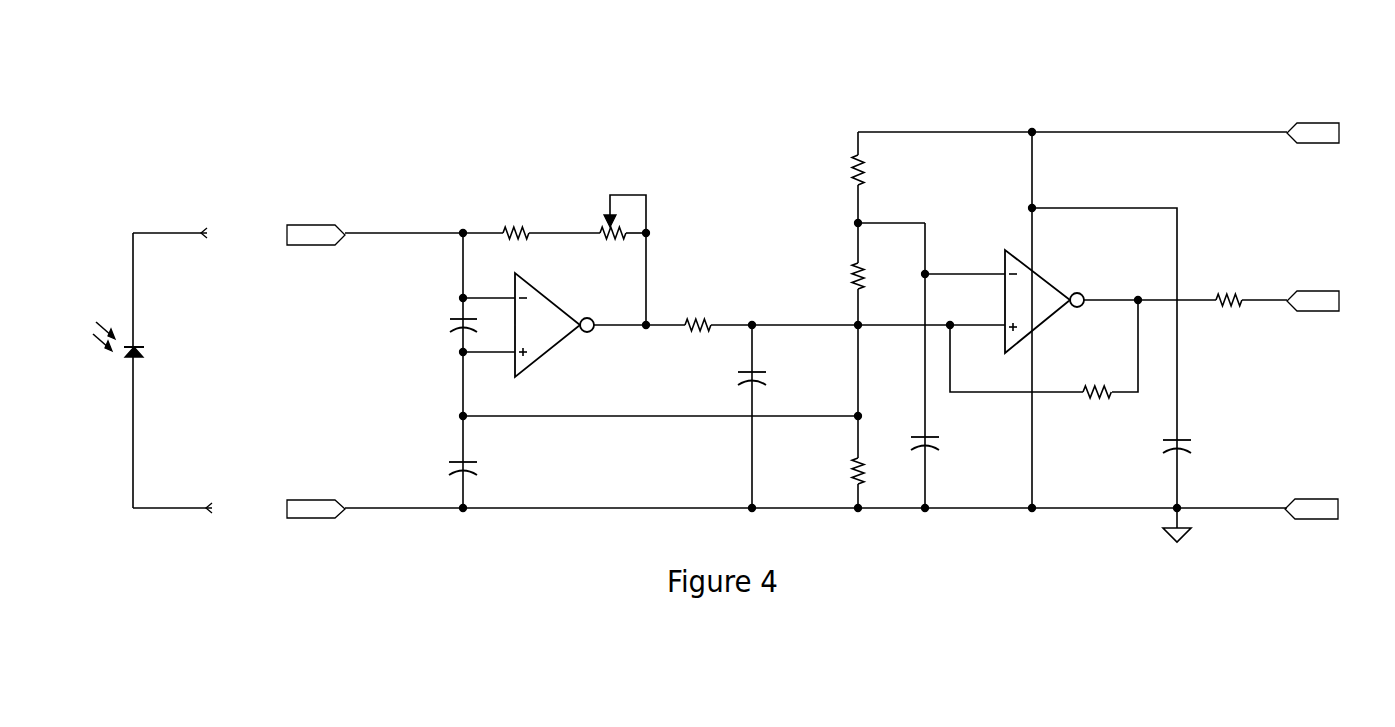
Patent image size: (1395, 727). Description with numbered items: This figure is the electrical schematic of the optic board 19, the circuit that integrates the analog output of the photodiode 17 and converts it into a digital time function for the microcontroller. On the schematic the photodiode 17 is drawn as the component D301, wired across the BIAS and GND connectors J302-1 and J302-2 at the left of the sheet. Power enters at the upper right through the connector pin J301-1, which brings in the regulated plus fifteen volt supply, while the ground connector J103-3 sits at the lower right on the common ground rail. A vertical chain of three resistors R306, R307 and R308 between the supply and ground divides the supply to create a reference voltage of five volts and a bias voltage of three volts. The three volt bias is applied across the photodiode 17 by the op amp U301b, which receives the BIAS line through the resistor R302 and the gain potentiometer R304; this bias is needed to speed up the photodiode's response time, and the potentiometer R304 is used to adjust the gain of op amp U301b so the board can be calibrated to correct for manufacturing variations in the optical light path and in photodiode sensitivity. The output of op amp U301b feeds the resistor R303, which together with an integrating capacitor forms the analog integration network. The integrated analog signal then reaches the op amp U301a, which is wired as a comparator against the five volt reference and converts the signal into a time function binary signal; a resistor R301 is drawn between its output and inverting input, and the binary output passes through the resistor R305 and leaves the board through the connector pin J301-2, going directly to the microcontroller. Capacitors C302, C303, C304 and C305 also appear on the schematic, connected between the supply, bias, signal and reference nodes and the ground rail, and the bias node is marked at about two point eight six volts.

The photodiode 17 is at (127, 358).
The optic board 19 is at (340, 102).
The photodiode OSD1-E D301 is at (167, 370).
The op amp A of U301 U301a is at (1043, 300).
The op amp B of U301 U301b is at (555, 325).
The feedback resistor 249k R301 is at (1098, 362).
The resistor 1.0k R302 is at (518, 207).
The resistor R303 is at (704, 297).
The potentiometer R304 is at (667, 260).
The resistor R305 is at (1232, 274).
The resistor R306 is at (825, 174).
The resistor R307 is at (825, 275).
The resistor R308 is at (825, 472).
The capacitor 1.0uF C302 is at (497, 465).
The capacitor 1.0uF C303 is at (872, 414).
The capacitor 1.0uF C304 is at (1210, 446).
The capacitor 10nF C305 is at (433, 328).
The pin 1 of J301 J301-1 is at (1334, 123).
The pin 2 of J301 J301-2 is at (1327, 292).
The connector BIAS J302-1 is at (240, 223).
The connector GND J302-2 is at (240, 498).
The connector GND J103-3 is at (1338, 499).